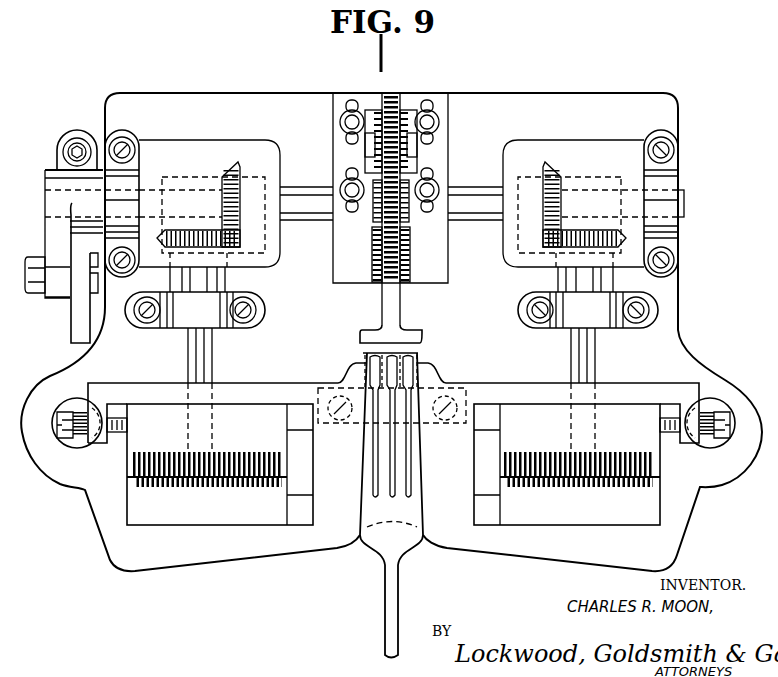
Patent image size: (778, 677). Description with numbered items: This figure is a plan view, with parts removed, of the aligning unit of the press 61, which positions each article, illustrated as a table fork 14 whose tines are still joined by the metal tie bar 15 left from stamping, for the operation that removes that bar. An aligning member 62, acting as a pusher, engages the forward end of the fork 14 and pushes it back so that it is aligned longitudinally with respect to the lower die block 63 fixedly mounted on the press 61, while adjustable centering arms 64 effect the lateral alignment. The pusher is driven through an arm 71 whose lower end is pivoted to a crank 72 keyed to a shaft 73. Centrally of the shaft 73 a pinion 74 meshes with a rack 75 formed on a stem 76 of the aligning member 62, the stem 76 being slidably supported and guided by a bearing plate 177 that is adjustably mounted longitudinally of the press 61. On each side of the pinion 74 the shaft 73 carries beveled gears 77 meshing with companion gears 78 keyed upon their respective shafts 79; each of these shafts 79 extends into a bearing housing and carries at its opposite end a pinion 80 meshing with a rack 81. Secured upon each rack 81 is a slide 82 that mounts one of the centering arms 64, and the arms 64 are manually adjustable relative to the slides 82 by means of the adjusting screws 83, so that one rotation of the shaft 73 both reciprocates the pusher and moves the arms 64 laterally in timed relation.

The table fork 14 is at (367, 470).
The tie bar 15 is at (378, 342).
The press 61 is at (672, 318).
The aligning member 62 is at (410, 332).
The lower die block 63 is at (423, 372).
The centering arms 64 is at (123, 390).
The arm 71 is at (82, 317).
The crank 72 is at (53, 239).
The shaft 73 is at (305, 197).
The pinion 74 is at (405, 180).
The rack 75 is at (410, 257).
The stem 76 is at (383, 290).
The beveled gears 77 is at (233, 163).
The companion gears 78 is at (162, 177).
The shafts 79 is at (205, 352).
The pinions 80 is at (220, 452).
The racks 81 is at (143, 487).
The slide 82 is at (229, 515).
The adjusting screws 83 is at (65, 412).
The bearing plate 177 is at (435, 108).